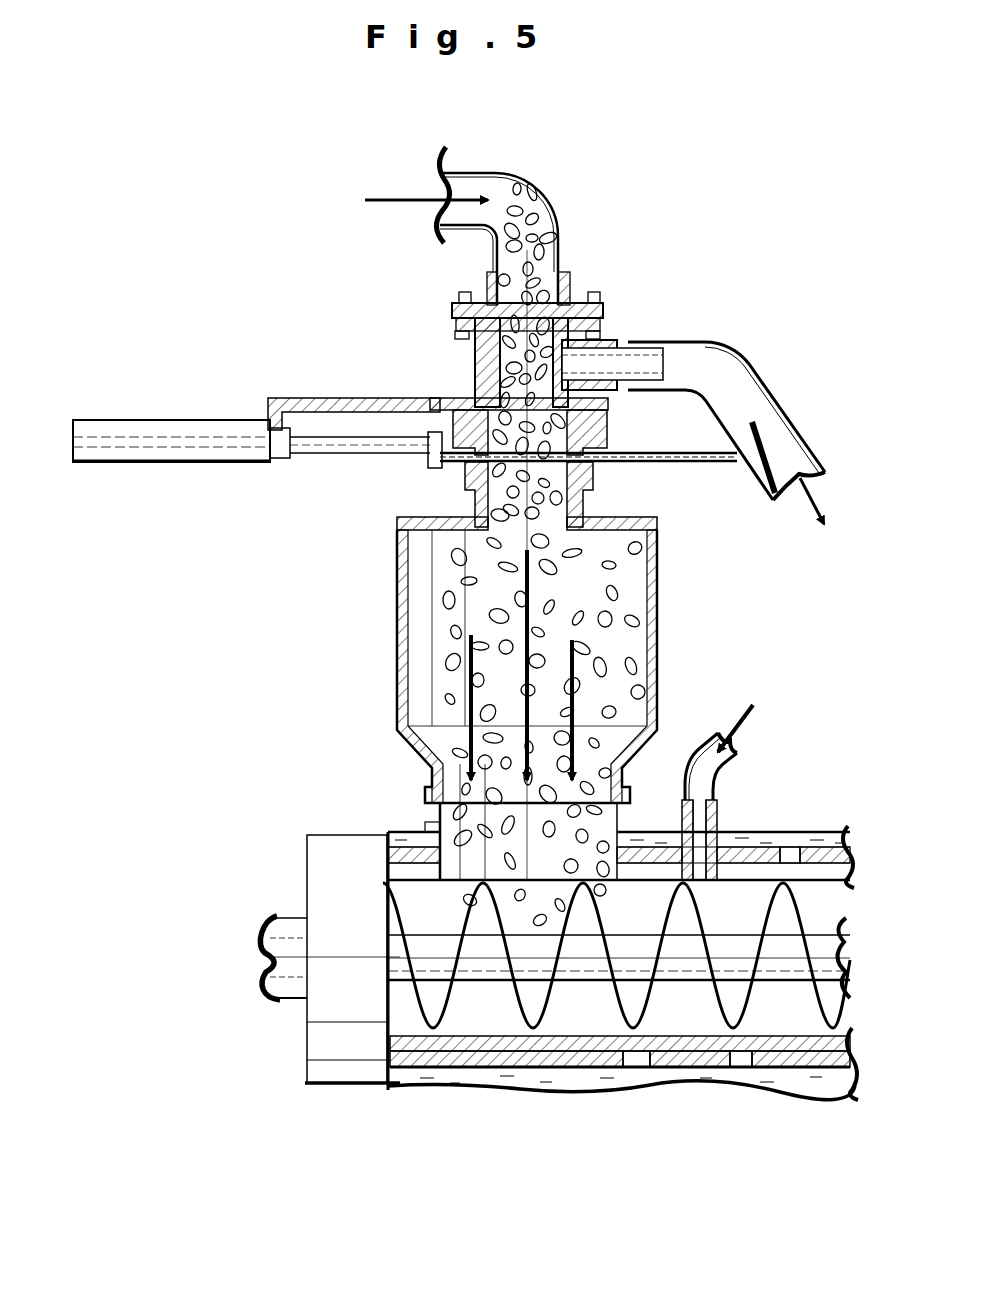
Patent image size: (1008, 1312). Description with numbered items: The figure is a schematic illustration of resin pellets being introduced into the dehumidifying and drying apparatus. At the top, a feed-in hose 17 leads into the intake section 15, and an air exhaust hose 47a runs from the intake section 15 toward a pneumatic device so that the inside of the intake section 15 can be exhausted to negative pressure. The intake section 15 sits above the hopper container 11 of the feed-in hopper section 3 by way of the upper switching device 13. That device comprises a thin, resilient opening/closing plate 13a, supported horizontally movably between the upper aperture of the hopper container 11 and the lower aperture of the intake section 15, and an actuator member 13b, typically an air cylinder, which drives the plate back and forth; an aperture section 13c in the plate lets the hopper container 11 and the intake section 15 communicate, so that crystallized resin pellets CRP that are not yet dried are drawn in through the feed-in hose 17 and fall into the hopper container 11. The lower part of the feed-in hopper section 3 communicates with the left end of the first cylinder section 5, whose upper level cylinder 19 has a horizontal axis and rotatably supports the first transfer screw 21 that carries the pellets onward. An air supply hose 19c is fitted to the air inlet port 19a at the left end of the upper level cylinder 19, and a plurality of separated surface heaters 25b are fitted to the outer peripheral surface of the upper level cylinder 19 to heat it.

The feed-in hopper section 3 is at (322, 630).
The first cylinder section 5 is at (552, 1093).
The hopper container 11 is at (420, 603).
The upper switching device 13 is at (184, 420).
The opening/closing plate 13a is at (707, 462).
The actuator member 13b is at (202, 434).
The aperture section 13c is at (543, 465).
The intake section 15 is at (487, 358).
The feed-in hose 17 is at (528, 202).
The upper level cylinder 19 is at (738, 1070).
The air inlet port 19a is at (722, 837).
The air supply hose 19c is at (705, 768).
The first transfer screw 21 is at (442, 955).
The surface heaters 25b is at (683, 1063).
The air exhaust hose 47a is at (720, 390).
The crystallized resin pellets CRP is at (618, 617).